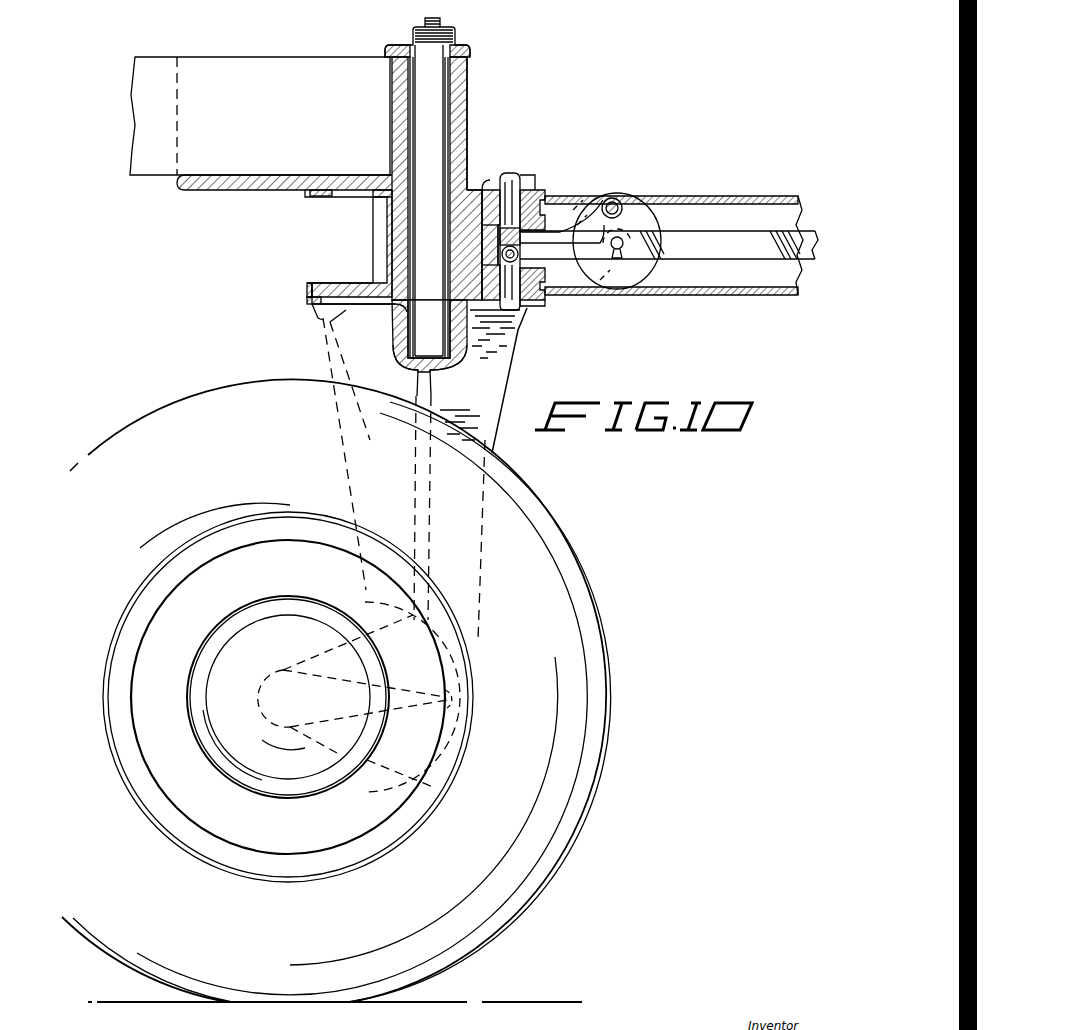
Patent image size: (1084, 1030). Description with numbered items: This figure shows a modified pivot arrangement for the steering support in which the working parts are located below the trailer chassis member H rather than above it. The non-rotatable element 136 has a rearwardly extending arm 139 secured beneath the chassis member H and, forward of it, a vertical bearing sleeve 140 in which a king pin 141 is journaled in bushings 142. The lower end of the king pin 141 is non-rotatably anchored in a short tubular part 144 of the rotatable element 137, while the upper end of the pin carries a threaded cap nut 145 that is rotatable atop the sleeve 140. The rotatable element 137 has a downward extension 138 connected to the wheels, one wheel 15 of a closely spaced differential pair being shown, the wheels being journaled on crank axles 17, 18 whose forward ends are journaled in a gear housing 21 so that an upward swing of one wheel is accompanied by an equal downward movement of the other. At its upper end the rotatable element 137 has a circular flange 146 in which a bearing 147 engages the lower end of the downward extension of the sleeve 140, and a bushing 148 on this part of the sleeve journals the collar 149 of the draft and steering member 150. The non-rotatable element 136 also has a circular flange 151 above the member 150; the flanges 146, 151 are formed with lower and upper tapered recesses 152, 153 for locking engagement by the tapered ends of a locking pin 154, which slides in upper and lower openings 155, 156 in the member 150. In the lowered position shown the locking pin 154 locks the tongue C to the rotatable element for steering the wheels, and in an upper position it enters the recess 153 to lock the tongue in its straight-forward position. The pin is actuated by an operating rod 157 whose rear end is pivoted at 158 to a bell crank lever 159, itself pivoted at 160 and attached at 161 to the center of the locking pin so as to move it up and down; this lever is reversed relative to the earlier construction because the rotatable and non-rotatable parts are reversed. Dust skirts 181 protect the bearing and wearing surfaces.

The trailer chassis member H is at (133, 129).
The tongue C is at (735, 202).
The wheel 15 is at (598, 672).
The crank axle 17 is at (318, 750).
The crank axle 18 is at (321, 650).
The gear housing 21 is at (470, 665).
The non-rotatable element 136 is at (479, 128).
The rotatable element 137 is at (325, 325).
The downward extension 138 is at (487, 443).
The rearwardly extending arm 139 is at (190, 196).
The vertical bearing sleeve 140 is at (461, 146).
The king pin 141 is at (430, 100).
The bushings 142 is at (456, 82).
The tubular part 144 is at (398, 348).
The cap nut 145 is at (468, 53).
The circular flange 146 is at (332, 328).
The bearing 147 is at (386, 308).
The bushing 148 is at (385, 229).
The collar 149 is at (374, 258).
The draft and steering member 150 is at (304, 281).
The circular flange 151 is at (482, 180).
The lower tapered recess 152 is at (527, 308).
The upper tapered recess 153 is at (528, 182).
The locking pin 154 is at (506, 336).
The upper opening 155 is at (540, 195).
The lower opening 156 is at (556, 253).
The operating rod 157 is at (725, 255).
The pivot 158 is at (620, 259).
The bell crank lever 159 is at (579, 255).
The pivot 160 is at (610, 197).
The pivotal attachment 161 is at (572, 247).
The dust skirts 181 is at (312, 197).